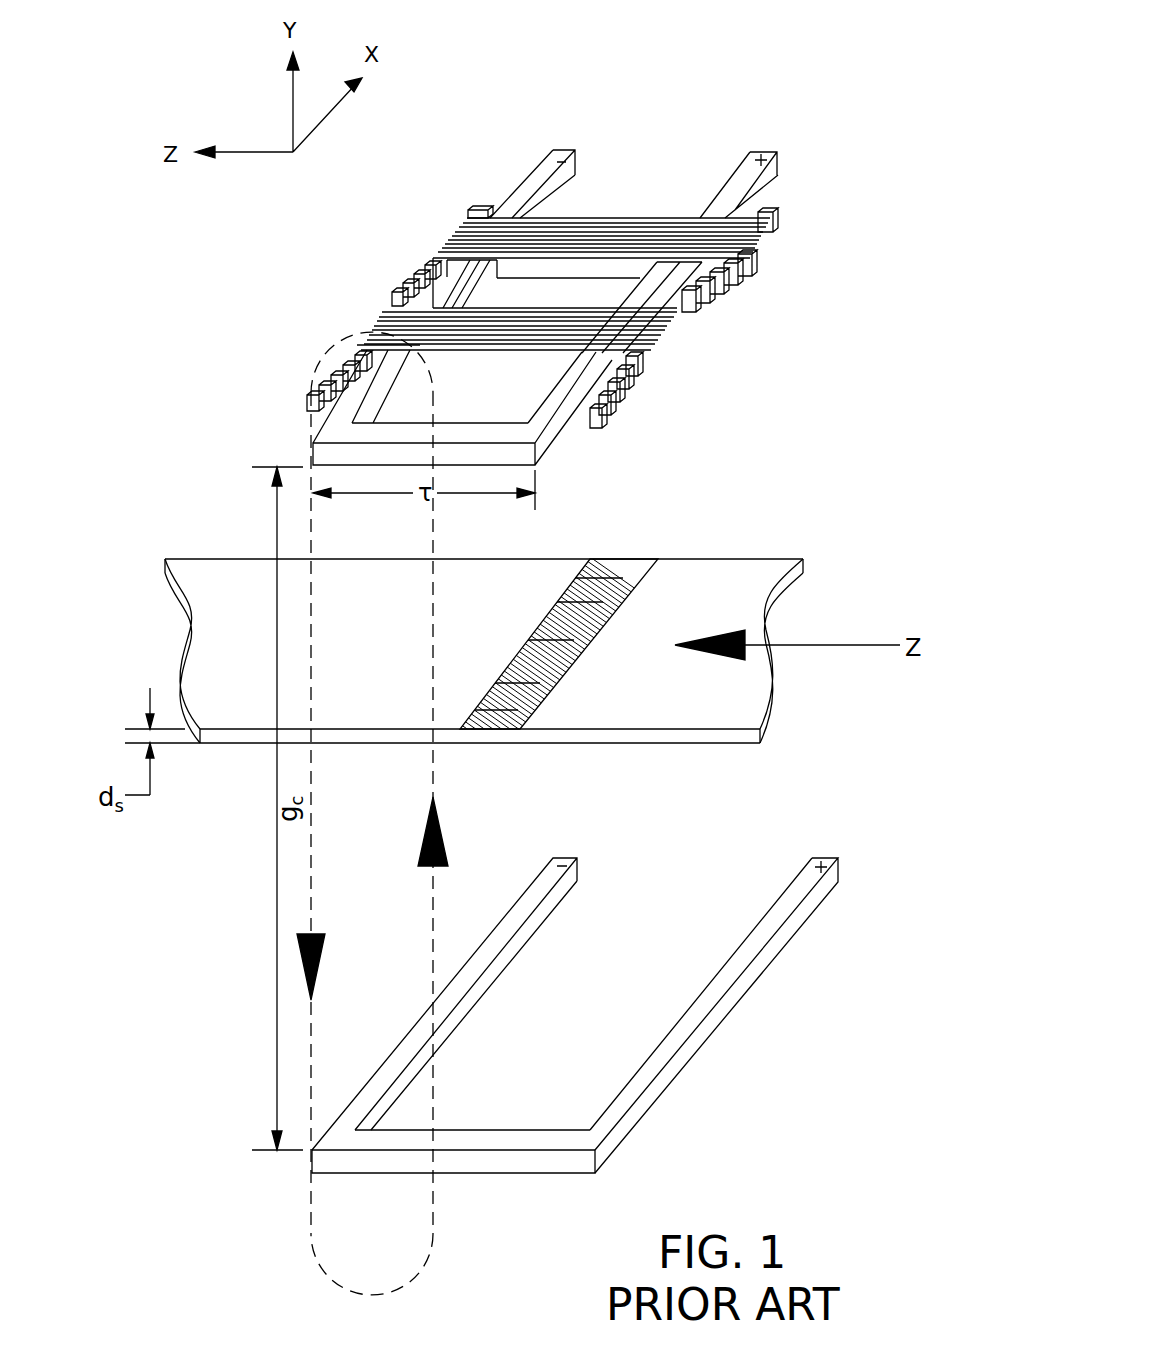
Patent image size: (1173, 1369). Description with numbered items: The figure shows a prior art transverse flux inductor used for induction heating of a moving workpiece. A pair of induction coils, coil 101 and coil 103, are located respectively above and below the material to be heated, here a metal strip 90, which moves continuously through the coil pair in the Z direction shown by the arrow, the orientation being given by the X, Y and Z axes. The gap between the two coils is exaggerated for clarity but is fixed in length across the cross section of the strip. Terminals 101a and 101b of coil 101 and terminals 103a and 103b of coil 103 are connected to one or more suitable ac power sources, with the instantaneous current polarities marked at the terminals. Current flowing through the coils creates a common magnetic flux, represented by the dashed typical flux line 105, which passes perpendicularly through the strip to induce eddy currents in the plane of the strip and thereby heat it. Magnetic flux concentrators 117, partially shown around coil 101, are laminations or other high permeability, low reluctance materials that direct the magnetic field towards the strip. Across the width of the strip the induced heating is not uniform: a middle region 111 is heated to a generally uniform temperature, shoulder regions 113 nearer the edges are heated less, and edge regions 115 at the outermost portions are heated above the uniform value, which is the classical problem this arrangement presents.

The metal strip 90 is at (697, 588).
The coil 101 is at (732, 86).
The terminal 101a is at (560, 150).
The terminal 101b is at (770, 150).
The coil 103 is at (744, 820).
The terminal 103a is at (590, 857).
The terminal 103b is at (810, 860).
The flux line 105 is at (433, 940).
The middle region 111 is at (597, 640).
The shoulder regions 113 is at (600, 590).
The edge regions 115 is at (628, 580).
The magnetic flux concentrators 117 is at (748, 243).